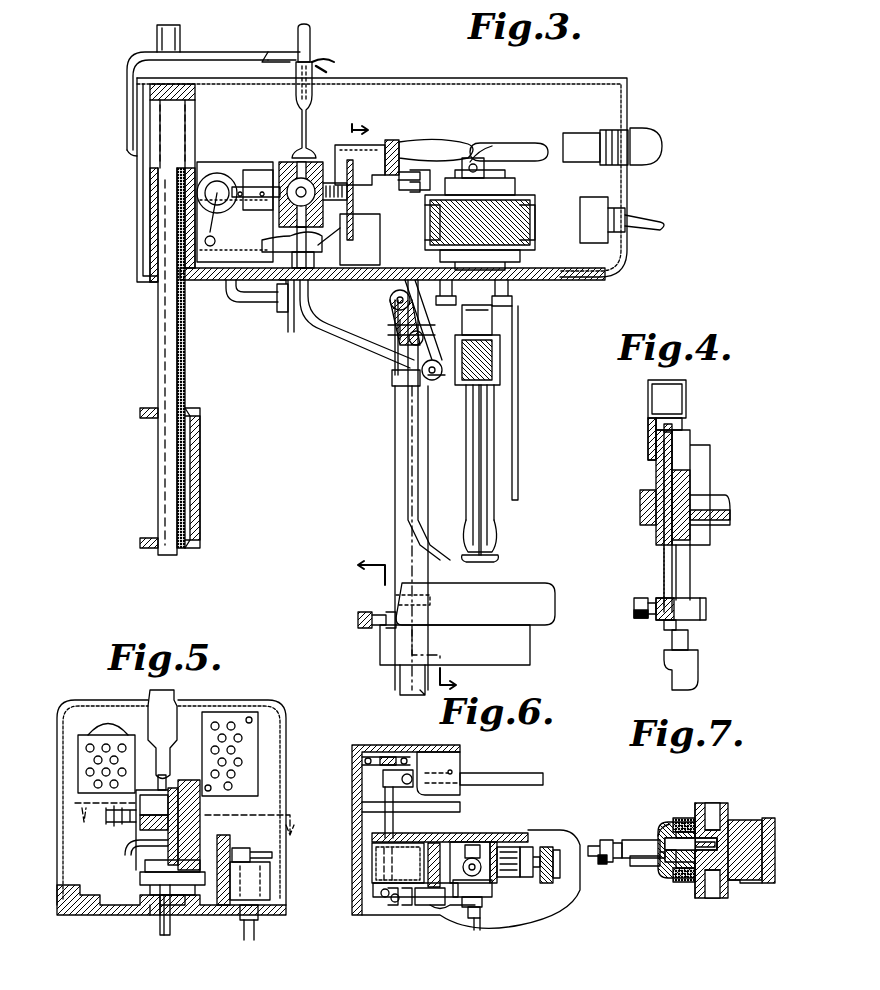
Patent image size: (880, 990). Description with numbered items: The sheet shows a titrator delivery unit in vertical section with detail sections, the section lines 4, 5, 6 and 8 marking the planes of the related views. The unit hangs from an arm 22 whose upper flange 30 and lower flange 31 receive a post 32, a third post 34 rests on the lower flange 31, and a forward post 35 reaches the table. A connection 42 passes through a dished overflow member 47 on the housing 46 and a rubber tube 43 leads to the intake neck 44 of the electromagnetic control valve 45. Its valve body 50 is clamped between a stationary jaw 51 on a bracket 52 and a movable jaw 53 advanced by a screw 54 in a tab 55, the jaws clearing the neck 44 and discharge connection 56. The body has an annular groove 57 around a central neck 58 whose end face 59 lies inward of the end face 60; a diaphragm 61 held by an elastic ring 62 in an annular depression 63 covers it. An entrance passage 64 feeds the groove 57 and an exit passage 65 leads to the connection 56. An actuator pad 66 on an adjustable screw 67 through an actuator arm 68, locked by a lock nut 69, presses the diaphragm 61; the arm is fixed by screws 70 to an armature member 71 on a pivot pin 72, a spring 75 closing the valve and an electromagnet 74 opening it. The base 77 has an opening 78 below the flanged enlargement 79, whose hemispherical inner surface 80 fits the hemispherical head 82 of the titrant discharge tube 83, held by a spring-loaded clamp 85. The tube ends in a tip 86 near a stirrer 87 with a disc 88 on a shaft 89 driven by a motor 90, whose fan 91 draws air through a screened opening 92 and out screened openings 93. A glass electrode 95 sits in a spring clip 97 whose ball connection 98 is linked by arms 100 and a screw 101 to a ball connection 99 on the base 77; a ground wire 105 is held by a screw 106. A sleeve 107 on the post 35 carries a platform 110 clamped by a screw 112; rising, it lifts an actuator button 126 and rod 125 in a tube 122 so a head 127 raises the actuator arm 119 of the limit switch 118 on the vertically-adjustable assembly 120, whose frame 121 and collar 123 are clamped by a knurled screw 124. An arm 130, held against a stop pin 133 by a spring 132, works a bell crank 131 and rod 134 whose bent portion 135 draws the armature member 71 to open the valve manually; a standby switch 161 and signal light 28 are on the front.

In FIG. 3, the section line 4— 4 is at (384, 426).
In FIG. 3, the section line 5— 5 is at (306, 322).
In FIG. 5, the section line 6— 6 is at (185, 816).
In FIG. 3, the section line 8— 8 is at (413, 618).
In FIG. 3, the arm 22 is at (200, 480).
In FIG. 3, the signal light 28 is at (640, 135).
In FIG. 3, the upper flange 30 is at (140, 418).
In FIG. 3, the lower flange 31 is at (140, 542).
In FIG. 3, the post 32 is at (158, 485).
In FIG. 3, the third post 34 is at (180, 36).
In FIG. 3, the forward post 35 is at (400, 678).
In FIG. 4, the forward post 35 is at (690, 558).
In FIG. 3, the connection 42 is at (310, 48).
In FIG. 3, the rubber tube 43 is at (296, 104).
In FIG. 5, the intake neck 44 is at (175, 768).
In FIG. 7, the intake neck 44 is at (724, 808).
In FIG. 3, the electromagnetic control valve 45 is at (310, 170).
In FIG. 5, the electromagnetic control valve 45 is at (178, 790).
In FIG. 7, the electromagnetic control valve 45 is at (710, 787).
In FIG. 3, the housing 46 is at (415, 80).
In FIG. 5, the housing 46 is at (200, 702).
In FIG. 3, the dished overflow member 47 is at (125, 98).
In FIG. 5, the valve body 50 is at (200, 810).
In FIG. 6, the valve body 50 is at (485, 848).
In FIG. 7, the valve body 50 is at (748, 820).
In FIG. 6, the stationary jaw 51 is at (462, 840).
In FIG. 3, the bracket 52 is at (342, 170).
In FIG. 5, the bracket 52 is at (200, 824).
In FIG. 6, the bracket 52 is at (470, 843).
In FIG. 7, the bracket 52 is at (766, 883).
In FIG. 6, the movable jaw 53 is at (505, 845).
In FIG. 3, the screw 54 is at (360, 239).
In FIG. 6, the screw 54 is at (522, 850).
In FIG. 6, the tab 55 is at (536, 850).
In FIG. 7, the discharge connection 56 is at (733, 885).
In FIG. 7, the annular groove 57 is at (680, 876).
In FIG. 7, the central neck 58 is at (668, 866).
In FIG. 7, the end face 59 is at (662, 858).
In FIG. 7, the end face 60 is at (666, 834).
In FIG. 5, the diaphragm 61 is at (143, 823).
In FIG. 6, the diaphragm 61 is at (490, 900).
In FIG. 7, the diaphragm 61 is at (665, 838).
In FIG. 6, the elastic ring 62 is at (500, 888).
In FIG. 7, the elastic ring 62 is at (686, 820).
In FIG. 7, the annular depression 63 is at (684, 880).
In FIG. 7, the entrance passage 64 is at (676, 826).
In FIG. 7, the exit passage 65 is at (712, 852).
In FIG. 6, the actuator pad 66 is at (488, 912).
In FIG. 7, the actuator pad 66 is at (658, 848).
In FIG. 6, the adjustable screw 67 is at (478, 932).
In FIG. 7, the adjustable screw 67 is at (634, 866).
In FIG. 6, the actuator arm 68 is at (458, 936).
In FIG. 7, the actuator arm 68 is at (604, 860).
In FIG. 5, the lock nut 69 is at (108, 822).
In FIG. 6, the lock nut 69 is at (488, 936).
In FIG. 7, the lock nut 69 is at (600, 846).
In FIG. 3, the screws 70 is at (258, 186).
In FIG. 6, the screws 70 is at (420, 905).
In FIG. 3, the armature member 71 is at (222, 180).
In FIG. 6, the armature member 71 is at (375, 892).
In FIG. 3, the pivot pin 72 is at (250, 170).
In FIG. 6, the pivot pin 72 is at (440, 908).
In FIG. 3, the electromagnet 74 is at (220, 175).
In FIG. 6, the electromagnet 74 is at (376, 862).
In FIG. 6, the spring 75 is at (438, 848).
In FIG. 3, the base 77 is at (215, 282).
In FIG. 4, the base 77 is at (728, 514).
In FIG. 5, the base 77 is at (90, 915).
In FIG. 3, the opening 78 is at (292, 332).
In FIG. 5, the opening 78 is at (150, 912).
In FIG. 3, the flanged enlargement 79 is at (318, 242).
In FIG. 5, the flanged enlargement 79 is at (145, 862).
In FIG. 5, the hemispherical inner surface 80 is at (183, 906).
In FIG. 5, the hemispherical head 82 is at (168, 925).
In FIG. 3, the titrant discharge tube 83 is at (352, 360).
In FIG. 5, the titrant discharge tube 83 is at (160, 930).
In FIG. 3, the spring-loaded clamp 85 is at (282, 242).
In FIG. 5, the spring-loaded clamp 85 is at (140, 879).
In FIG. 3, the tip 86 is at (450, 560).
In FIG. 3, the stirrer 87 is at (496, 458).
In FIG. 3, the disc 88 is at (496, 556).
In FIG. 3, the shaft 89 is at (482, 490).
In FIG. 3, the motor 90 is at (528, 225).
In FIG. 3, the fan 91 is at (530, 145).
In FIG. 3, the screened opening 92 is at (460, 284).
In FIG. 3, the screened openings 93 is at (150, 172).
In FIG. 5, the screened openings 93 is at (106, 712).
In FIG. 3, the glass electrode 95 is at (494, 424).
In FIG. 3, the spring clip 97 is at (500, 380).
In FIG. 3, the ball connection 98 is at (434, 382).
In FIG. 3, the ball connection 99 is at (392, 312).
In FIG. 3, the arms 100 is at (395, 332).
In FIG. 3, the screw 101 is at (420, 334).
In FIG. 3, the ground wire 105 is at (518, 340).
In FIG. 3, the screw 106 is at (512, 300).
In FIG. 3, the sleeve 107 is at (395, 497).
In FIG. 4, the sleeve 107 is at (698, 650).
In FIG. 3, the platform 110 is at (520, 648).
In FIG. 3, the screw 112 is at (364, 612).
In FIG. 3, the limit switch 118 is at (392, 132).
In FIG. 4, the limit switch 118 is at (686, 398).
In FIG. 3, the actuator arm 119 is at (405, 168).
In FIG. 4, the actuator arm 119 is at (676, 424).
In FIG. 4, the vertically-adjustable assembly 120 is at (636, 441).
In FIG. 3, the frame 121 is at (410, 144).
In FIG. 4, the frame 121 is at (648, 420).
In FIG. 3, the tube 122 is at (395, 365).
In FIG. 4, the tube 122 is at (665, 556).
In FIG. 3, the collar 123 is at (392, 380).
In FIG. 4, the collar 123 is at (706, 612).
In FIG. 4, the knurled screw 124 is at (642, 596).
In FIG. 4, the rod 125 is at (676, 586).
In FIG. 4, the actuator button 126 is at (664, 626).
In FIG. 3, the head 127 is at (405, 186).
In FIG. 4, the head 127 is at (675, 428).
In FIG. 3, the arm 130 is at (258, 300).
In FIG. 5, the arm 130 is at (248, 940).
In FIG. 6, the arm 130 is at (512, 770).
In FIG. 5, the bell crank 131 is at (270, 868).
In FIG. 6, the bell crank 131 is at (418, 752).
In FIG. 5, the spring 132 is at (272, 854).
In FIG. 6, the spring 132 is at (392, 752).
In FIG. 3, the stop pin 133 is at (282, 312).
In FIG. 5, the stop pin 133 is at (258, 918).
In FIG. 6, the stop pin 133 is at (455, 768).
In FIG. 5, the rod 134 is at (228, 842).
In FIG. 6, the rod 134 is at (362, 822).
In FIG. 5, the bent portion 135 is at (138, 842).
In FIG. 6, the bent portion 135 is at (392, 910).
In FIG. 3, the standby switch 161 is at (600, 198).